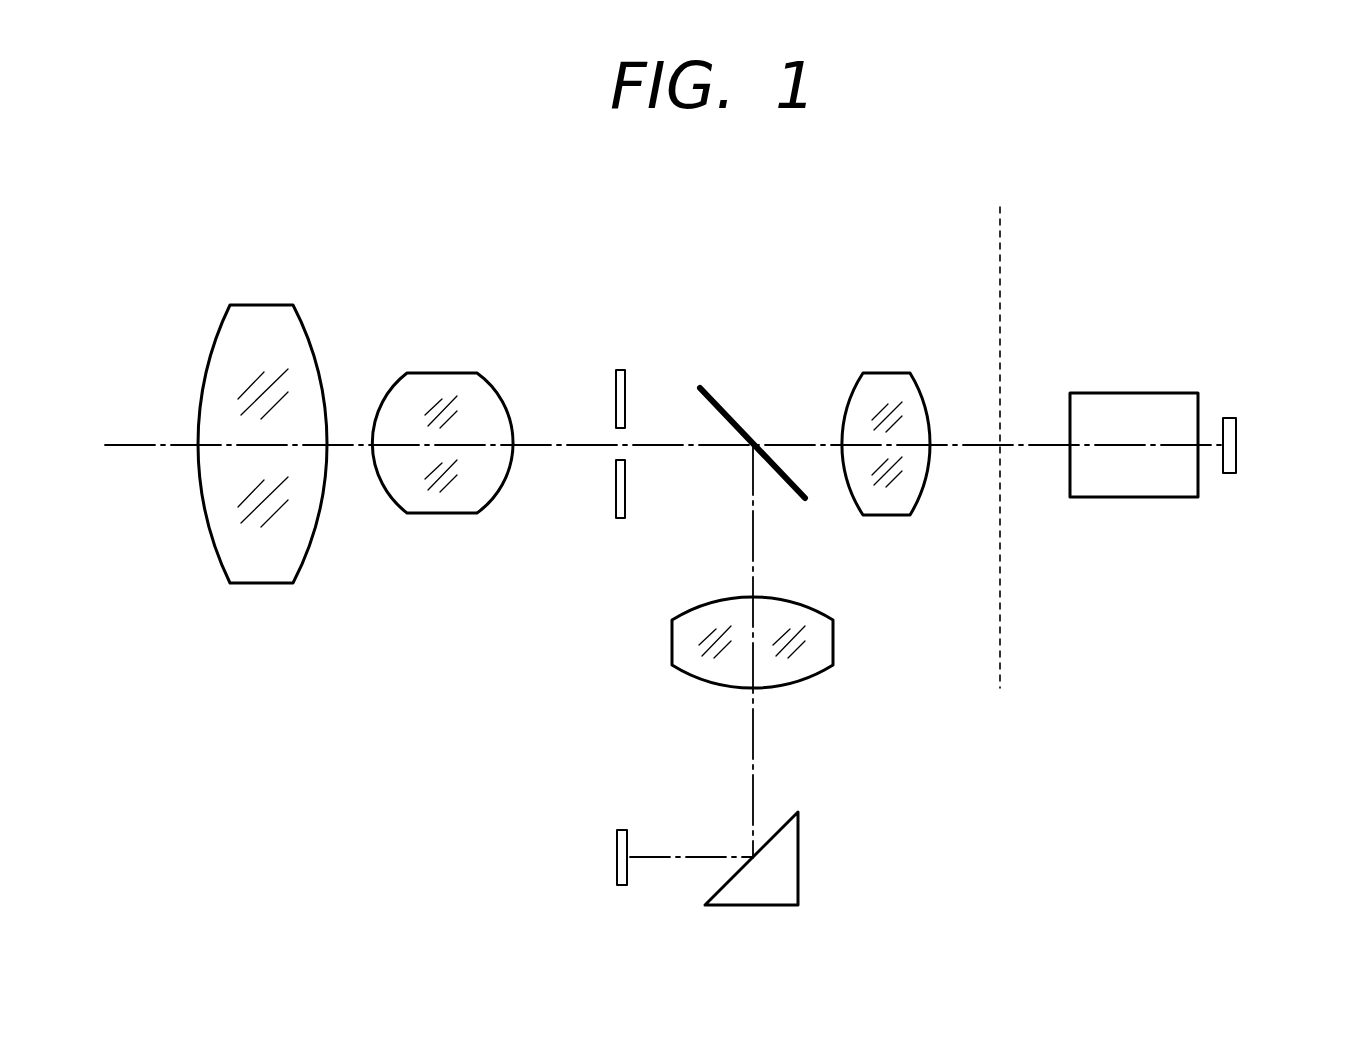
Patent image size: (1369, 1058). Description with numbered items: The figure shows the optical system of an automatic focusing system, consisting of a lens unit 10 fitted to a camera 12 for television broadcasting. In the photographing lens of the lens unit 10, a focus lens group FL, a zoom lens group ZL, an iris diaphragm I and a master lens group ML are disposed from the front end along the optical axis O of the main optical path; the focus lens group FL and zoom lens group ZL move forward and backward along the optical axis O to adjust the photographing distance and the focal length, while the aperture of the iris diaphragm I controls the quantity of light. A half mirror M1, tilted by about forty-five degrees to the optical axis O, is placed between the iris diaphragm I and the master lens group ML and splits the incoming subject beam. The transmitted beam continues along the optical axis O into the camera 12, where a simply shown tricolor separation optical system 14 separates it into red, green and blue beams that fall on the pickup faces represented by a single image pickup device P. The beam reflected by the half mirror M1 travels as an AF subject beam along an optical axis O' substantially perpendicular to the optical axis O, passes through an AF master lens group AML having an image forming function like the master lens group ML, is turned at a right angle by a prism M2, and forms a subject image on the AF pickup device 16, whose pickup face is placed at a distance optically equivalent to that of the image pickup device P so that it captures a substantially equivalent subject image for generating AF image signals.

The lens unit 10 is at (793, 257).
The camera 12 is at (1150, 250).
The tricolor separation optical system 14 is at (1133, 393).
The AF pickup device 16 is at (617, 845).
The focus lens group FL is at (270, 305).
The zoom lens group ZL is at (447, 373).
The iris diaphragm I is at (625, 370).
The half mirror M1 is at (738, 422).
The master lens group ML is at (890, 373).
The AF master lens group AML is at (835, 638).
The prism M2 is at (800, 840).
The optical axis O is at (664, 394).
The optical axis of the AF optical path O' is at (745, 651).
The image pickup device P is at (1237, 432).